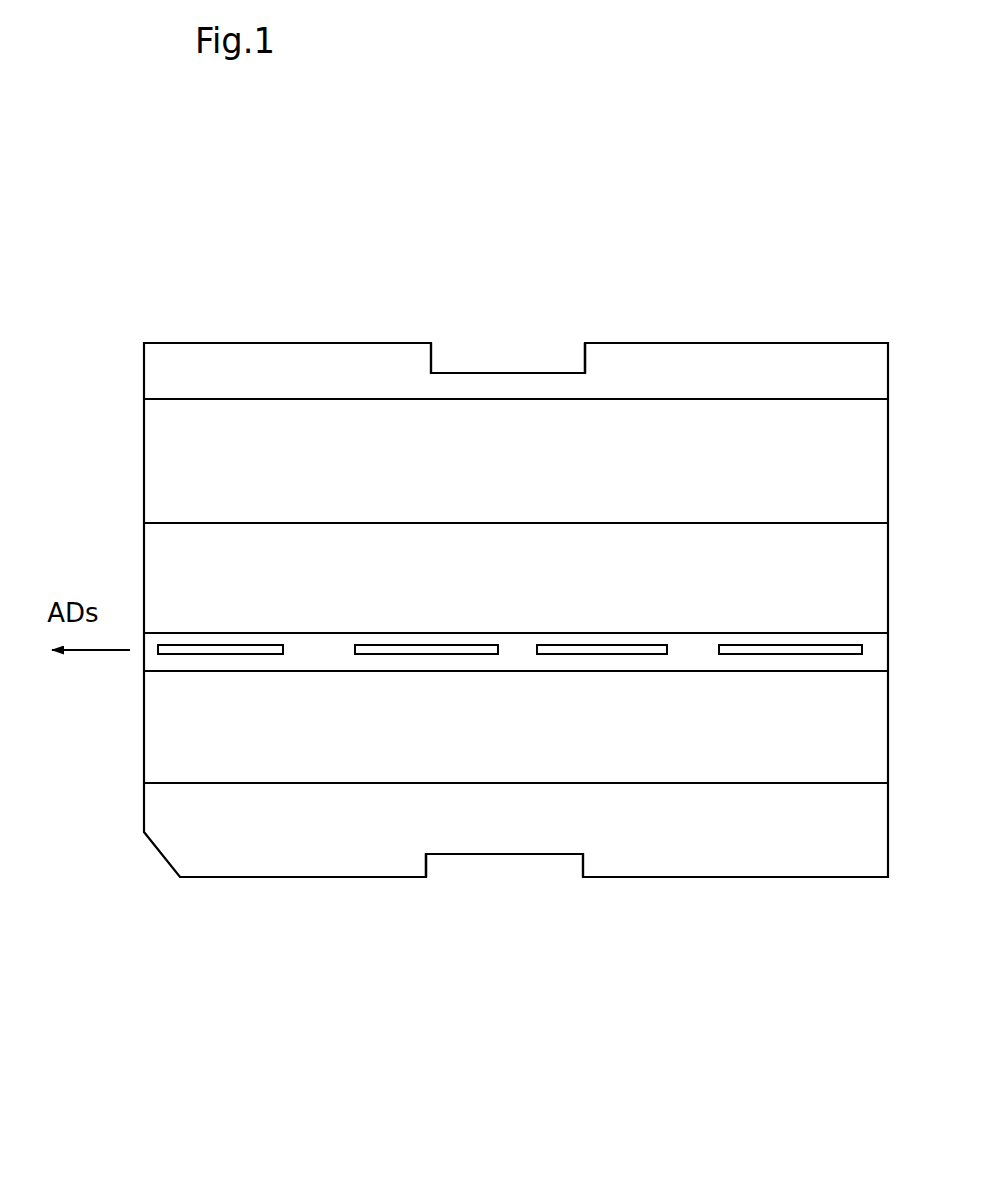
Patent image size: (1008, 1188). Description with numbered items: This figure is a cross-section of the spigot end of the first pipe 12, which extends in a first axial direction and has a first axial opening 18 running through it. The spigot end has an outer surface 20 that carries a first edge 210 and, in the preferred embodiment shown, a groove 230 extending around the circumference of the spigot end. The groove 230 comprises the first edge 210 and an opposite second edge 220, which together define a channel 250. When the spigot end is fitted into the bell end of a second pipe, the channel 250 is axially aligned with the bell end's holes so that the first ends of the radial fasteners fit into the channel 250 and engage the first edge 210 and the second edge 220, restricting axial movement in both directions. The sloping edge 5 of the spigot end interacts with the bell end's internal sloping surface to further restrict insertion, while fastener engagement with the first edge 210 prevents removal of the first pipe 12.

The sloping edge 5 is at (138, 334).
The first pipe 12 is at (552, 274).
The first axial opening 18 is at (130, 474).
The outer surface 20 is at (273, 326).
The first edge 210 is at (419, 891).
The second edge 220 is at (579, 883).
The groove 230 is at (627, 297).
The channel 250 is at (496, 289).